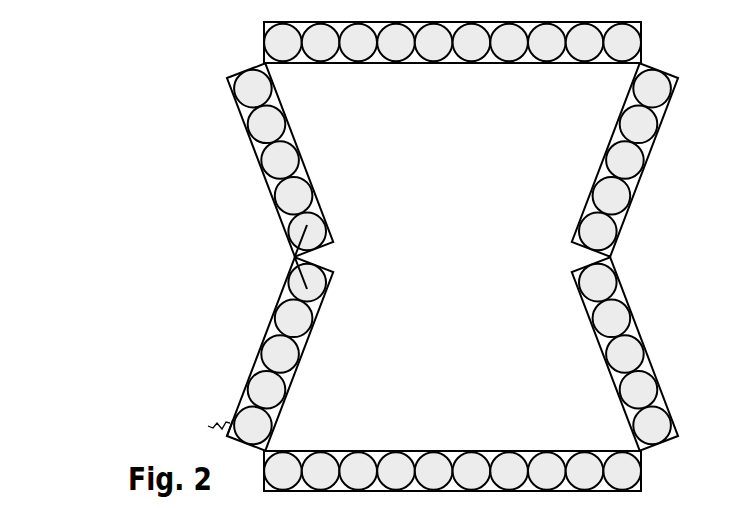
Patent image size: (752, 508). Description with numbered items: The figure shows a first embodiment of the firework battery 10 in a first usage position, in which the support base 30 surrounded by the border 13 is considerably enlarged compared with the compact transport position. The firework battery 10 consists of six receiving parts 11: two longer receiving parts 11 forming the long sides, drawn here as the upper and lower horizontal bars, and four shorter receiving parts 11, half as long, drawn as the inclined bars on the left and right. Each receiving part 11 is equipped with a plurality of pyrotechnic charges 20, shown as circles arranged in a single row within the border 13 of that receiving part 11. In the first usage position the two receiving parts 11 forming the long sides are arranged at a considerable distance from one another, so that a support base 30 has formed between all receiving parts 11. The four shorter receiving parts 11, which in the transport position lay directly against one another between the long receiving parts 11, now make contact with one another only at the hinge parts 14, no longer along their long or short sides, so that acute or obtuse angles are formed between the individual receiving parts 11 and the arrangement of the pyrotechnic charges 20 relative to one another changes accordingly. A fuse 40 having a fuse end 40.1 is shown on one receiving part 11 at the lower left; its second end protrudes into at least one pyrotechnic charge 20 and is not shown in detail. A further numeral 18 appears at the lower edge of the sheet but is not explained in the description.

The firework battery 10 is at (202, 101).
The receiving part 11 is at (253, 148).
The border 13 is at (242, 405).
The hinge part 14 is at (296, 257).
The pyrotechnic charge 20 is at (272, 355).
The support base 30 is at (467, 261).
The fuse 40 is at (225, 423).
The fuse end 40.1 is at (208, 426).
The lower segment 18 is at (68, 503).